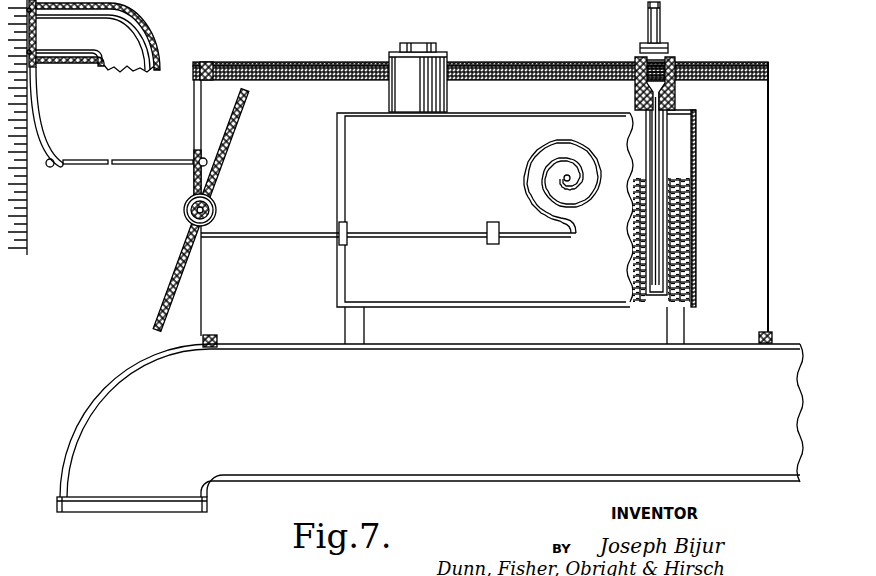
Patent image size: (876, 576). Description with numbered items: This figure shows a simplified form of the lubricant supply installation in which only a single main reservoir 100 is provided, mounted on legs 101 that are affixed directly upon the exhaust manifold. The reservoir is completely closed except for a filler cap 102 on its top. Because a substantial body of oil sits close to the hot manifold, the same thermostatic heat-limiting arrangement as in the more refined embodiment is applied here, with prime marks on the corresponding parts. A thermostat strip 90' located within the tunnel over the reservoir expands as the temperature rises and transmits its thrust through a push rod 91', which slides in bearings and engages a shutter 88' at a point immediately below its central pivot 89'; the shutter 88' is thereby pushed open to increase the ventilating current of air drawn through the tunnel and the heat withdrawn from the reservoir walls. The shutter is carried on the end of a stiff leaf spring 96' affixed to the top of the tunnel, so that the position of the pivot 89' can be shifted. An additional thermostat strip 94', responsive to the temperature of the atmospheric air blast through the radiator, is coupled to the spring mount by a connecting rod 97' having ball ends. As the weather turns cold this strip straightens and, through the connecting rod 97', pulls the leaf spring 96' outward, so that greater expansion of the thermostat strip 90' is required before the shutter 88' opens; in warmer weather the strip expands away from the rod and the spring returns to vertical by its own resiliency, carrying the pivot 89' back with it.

The shutter 88' is at (188, 210).
The pivot 89' is at (216, 210).
The thermostat strip 90' is at (541, 186).
The push rod 91' is at (388, 243).
The thermostat strip 94' is at (56, 117).
The leaf spring 96' is at (210, 205).
The connecting rod 97' is at (128, 175).
The main reservoir 100 is at (462, 292).
The legs 101 is at (345, 326).
The filler cap 102 is at (419, 43).